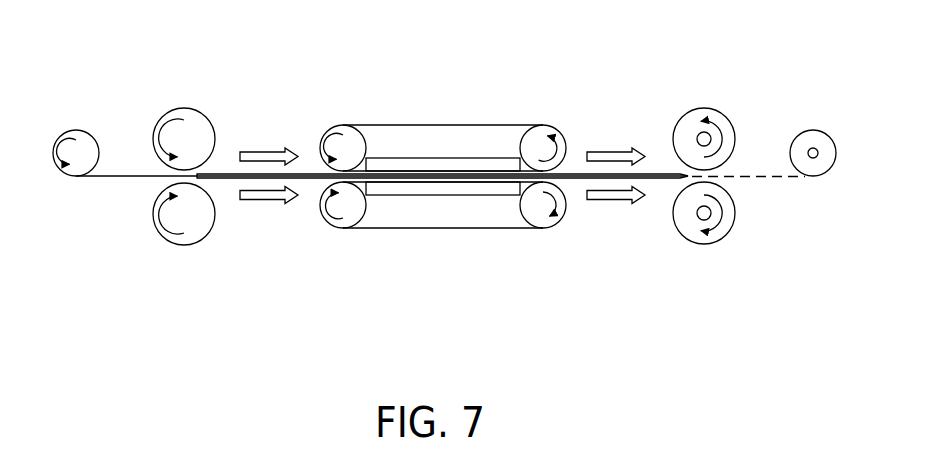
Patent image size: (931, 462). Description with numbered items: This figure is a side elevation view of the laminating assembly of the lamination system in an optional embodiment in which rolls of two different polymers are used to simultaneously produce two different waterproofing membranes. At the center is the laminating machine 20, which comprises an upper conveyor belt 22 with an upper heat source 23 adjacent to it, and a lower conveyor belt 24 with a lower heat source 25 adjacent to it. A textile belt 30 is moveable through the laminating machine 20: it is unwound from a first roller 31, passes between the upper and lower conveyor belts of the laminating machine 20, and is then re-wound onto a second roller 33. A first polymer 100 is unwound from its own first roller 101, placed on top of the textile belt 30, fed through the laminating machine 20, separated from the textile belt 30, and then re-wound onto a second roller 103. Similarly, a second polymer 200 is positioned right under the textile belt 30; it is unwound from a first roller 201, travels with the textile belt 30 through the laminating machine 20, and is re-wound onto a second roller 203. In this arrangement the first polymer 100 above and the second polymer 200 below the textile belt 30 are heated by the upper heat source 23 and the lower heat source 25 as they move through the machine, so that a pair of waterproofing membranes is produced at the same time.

The laminating machine 20 is at (443, 179).
The upper conveyor belt 22 is at (466, 125).
The upper heat source 23 is at (397, 160).
The lower conveyor belt 24 is at (472, 229).
The lower heat source 25 is at (384, 189).
The textile belt 30 is at (118, 178).
The first roller 31 is at (75, 128).
The second roller 33 is at (808, 130).
The first polymer 100 is at (227, 176).
The first roller 101 is at (182, 108).
The second roller 103 is at (705, 108).
The second polymer 200 is at (227, 178).
The first roller 201 is at (182, 243).
The second roller 203 is at (692, 226).